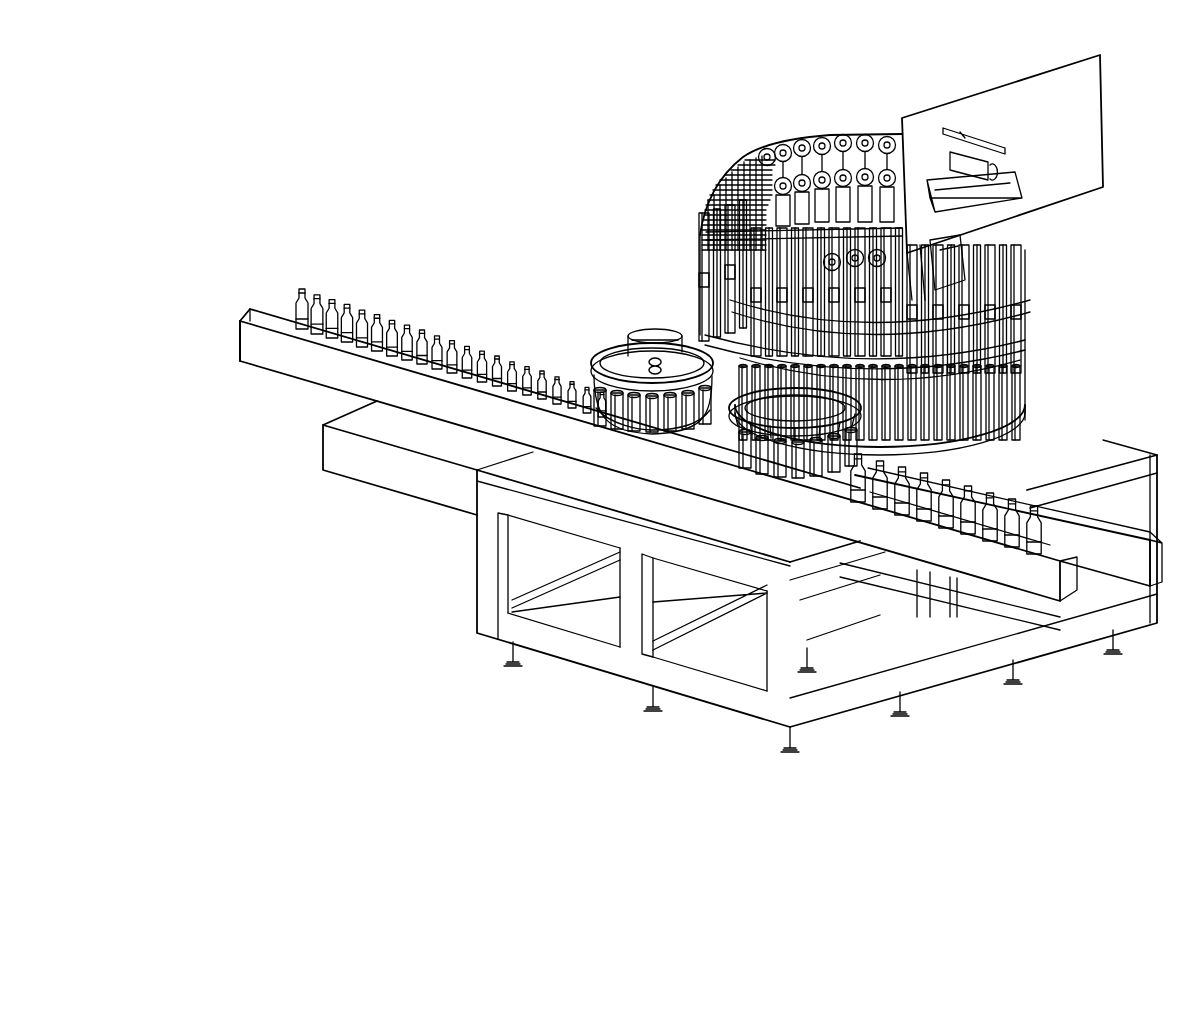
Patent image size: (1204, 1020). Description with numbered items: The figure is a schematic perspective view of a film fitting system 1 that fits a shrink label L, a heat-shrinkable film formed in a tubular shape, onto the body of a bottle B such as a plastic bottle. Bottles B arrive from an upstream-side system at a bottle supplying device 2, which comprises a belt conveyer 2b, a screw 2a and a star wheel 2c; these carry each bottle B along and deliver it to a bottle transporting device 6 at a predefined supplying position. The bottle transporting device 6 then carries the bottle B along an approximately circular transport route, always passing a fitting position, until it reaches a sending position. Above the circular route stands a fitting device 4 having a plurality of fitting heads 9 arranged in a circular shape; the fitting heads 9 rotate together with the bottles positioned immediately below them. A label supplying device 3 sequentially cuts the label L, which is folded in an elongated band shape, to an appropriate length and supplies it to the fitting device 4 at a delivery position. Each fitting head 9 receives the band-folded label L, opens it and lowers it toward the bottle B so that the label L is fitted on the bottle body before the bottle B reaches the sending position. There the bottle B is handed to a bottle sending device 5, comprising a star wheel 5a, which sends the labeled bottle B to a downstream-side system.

The film fitting system 1 is at (712, 84).
The bottle supplying device 2 is at (526, 294).
The screw 2a is at (490, 386).
The belt conveyer 2b is at (274, 320).
The star wheel 2c is at (602, 341).
The label supplying device 3 is at (1018, 182).
The fitting device 4 is at (836, 128).
The bottle sending device 5 is at (752, 487).
The star wheel 5a is at (880, 438).
The bottle transporting device 6 is at (1012, 420).
The fitting heads 9 is at (872, 134).
The bottle B is at (395, 322).
The label L is at (960, 536).